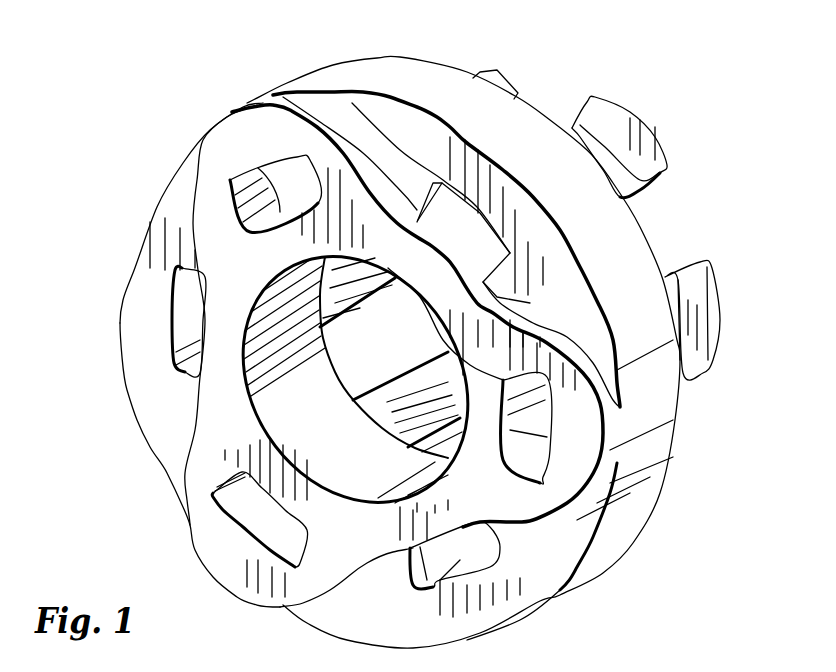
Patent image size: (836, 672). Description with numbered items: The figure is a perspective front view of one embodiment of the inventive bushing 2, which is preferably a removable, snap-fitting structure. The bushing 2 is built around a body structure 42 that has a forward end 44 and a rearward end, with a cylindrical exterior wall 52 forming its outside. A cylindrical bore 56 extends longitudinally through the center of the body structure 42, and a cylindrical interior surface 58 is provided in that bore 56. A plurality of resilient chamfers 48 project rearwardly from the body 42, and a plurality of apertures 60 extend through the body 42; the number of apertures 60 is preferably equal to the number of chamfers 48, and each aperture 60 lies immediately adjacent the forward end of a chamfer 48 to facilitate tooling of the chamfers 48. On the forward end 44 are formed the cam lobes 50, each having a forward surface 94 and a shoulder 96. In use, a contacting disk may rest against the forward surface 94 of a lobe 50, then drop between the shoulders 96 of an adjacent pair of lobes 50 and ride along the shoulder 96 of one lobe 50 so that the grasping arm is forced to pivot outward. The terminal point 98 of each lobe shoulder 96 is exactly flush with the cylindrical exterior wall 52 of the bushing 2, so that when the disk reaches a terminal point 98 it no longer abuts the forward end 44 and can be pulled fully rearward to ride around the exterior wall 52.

The bushing 2 is at (642, 97).
The body structure 42 is at (172, 190).
The forward end 44 is at (160, 385).
The resilient chamfers 48 is at (640, 133).
The cam lobe 50 is at (252, 125).
The cylindrical exterior wall 52 is at (433, 87).
The cylindrical bore 56 is at (323, 352).
The cylindrical interior surface 58 is at (288, 401).
The apertures 60 is at (280, 180).
The forward surface 94 is at (277, 130).
The shoulder 96 is at (343, 127).
The terminal point 98 is at (240, 105).